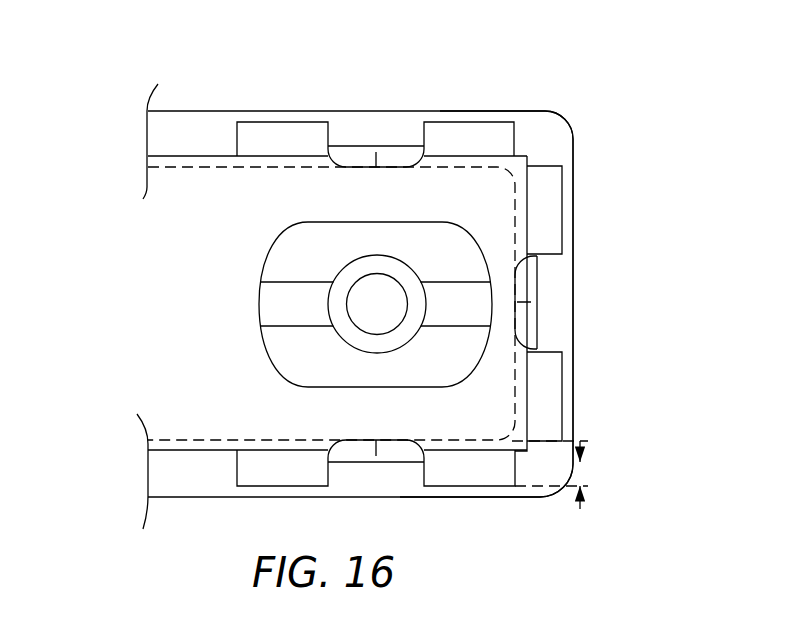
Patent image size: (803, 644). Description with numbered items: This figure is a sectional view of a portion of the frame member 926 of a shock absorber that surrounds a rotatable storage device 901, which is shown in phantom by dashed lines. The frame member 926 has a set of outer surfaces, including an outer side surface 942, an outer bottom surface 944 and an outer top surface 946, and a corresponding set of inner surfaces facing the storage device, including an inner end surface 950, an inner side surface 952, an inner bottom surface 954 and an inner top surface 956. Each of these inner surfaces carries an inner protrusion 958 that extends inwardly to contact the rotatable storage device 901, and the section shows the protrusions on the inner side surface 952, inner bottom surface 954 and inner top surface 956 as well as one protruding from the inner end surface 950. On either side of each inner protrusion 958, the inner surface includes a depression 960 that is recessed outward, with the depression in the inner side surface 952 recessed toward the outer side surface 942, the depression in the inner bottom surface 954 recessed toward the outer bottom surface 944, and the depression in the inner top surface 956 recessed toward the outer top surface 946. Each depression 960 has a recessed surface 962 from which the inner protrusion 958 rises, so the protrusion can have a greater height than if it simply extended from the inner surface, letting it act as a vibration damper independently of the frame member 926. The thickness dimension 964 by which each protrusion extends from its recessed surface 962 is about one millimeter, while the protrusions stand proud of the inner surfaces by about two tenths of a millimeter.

The rotatable storage device 901 is at (495, 168).
The frame member 926 is at (549, 111).
The outer side surface 942 is at (573, 332).
The outer bottom surface 944 is at (428, 498).
The outer top surface 946 is at (457, 112).
The inner end surface 950 is at (193, 197).
The inner side surface 952 is at (527, 159).
The inner bottom surface 954 is at (213, 450).
The inner top surface 956 is at (190, 157).
The inner protrusion 958 is at (363, 155).
The depression 960 is at (312, 130).
The recessed surface 962 is at (437, 123).
The thickness dimension 964 is at (582, 445).